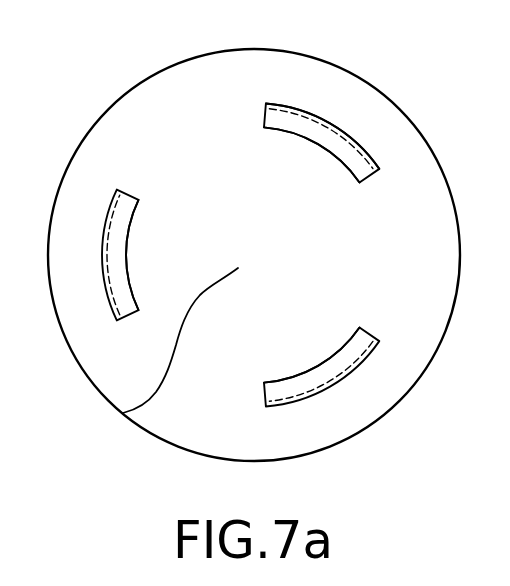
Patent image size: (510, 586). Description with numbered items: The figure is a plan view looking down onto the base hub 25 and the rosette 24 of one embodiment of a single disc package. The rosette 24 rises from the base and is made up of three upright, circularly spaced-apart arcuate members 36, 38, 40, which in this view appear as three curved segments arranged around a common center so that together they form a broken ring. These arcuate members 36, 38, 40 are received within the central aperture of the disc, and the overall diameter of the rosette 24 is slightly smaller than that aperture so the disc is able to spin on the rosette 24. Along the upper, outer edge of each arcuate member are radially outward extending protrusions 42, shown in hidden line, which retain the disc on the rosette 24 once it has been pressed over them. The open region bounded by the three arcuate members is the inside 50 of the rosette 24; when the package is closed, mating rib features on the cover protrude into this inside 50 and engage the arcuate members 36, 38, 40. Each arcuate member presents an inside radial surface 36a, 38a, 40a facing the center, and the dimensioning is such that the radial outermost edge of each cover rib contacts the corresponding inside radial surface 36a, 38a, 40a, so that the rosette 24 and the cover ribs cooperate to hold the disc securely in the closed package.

The disc body 25 is at (167, 95).
The rosette 24 is at (349, 133).
The arcuate member 36 is at (133, 195).
The arcuate member 38 is at (265, 113).
The arcuate member 40 is at (263, 393).
The inside radial surface 36a is at (127, 245).
The inside radial surface 38a is at (328, 151).
The inside radial surface 40a is at (306, 372).
The radially outward extending protrusions 42 is at (316, 116).
The inside of the rosette 50 is at (123, 413).